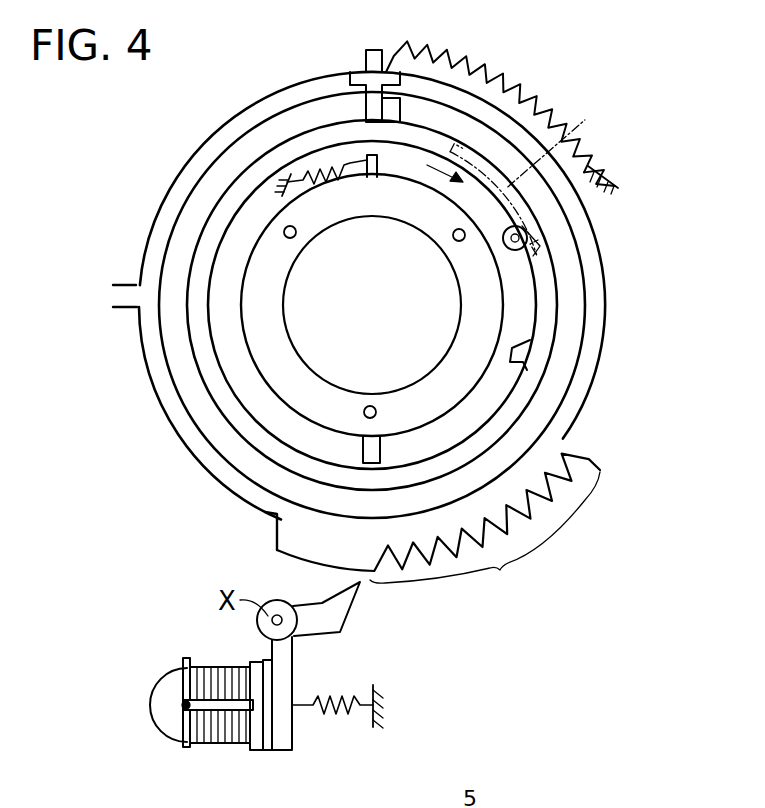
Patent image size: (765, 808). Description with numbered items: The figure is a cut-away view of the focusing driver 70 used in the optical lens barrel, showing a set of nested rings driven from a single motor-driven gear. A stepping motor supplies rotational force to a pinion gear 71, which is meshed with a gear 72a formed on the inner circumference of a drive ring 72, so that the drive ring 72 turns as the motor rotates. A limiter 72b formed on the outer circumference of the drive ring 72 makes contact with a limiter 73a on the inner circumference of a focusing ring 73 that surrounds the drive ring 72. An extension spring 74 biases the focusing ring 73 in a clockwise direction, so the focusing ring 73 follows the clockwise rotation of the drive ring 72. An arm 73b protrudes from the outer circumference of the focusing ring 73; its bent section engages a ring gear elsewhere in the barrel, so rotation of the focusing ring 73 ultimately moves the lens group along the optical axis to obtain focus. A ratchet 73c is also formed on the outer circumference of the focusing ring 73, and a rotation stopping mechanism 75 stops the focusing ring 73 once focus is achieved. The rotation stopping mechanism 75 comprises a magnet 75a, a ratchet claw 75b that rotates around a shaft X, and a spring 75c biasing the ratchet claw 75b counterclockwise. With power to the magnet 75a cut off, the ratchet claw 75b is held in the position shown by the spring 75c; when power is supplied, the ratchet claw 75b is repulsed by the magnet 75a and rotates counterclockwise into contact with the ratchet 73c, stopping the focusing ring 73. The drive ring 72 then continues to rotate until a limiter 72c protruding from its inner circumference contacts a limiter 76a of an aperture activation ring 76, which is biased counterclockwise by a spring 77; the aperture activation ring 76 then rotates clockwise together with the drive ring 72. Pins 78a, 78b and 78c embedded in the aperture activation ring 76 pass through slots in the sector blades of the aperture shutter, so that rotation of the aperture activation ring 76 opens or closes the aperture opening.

The focusing driver 70 is at (168, 170).
The pinion gear 71 is at (532, 243).
The drive ring 72 is at (500, 415).
The gear 72a is at (586, 122).
The limiter 72b is at (418, 47).
The limiter 72c is at (518, 344).
The focusing ring 73 is at (600, 286).
The limiter 73a is at (372, 110).
The arm 73b is at (121, 310).
The ratchet 73c is at (438, 536).
The extension spring 74 is at (583, 140).
The rotation stopping mechanism 75 is at (150, 700).
The magnet 75a is at (222, 746).
The ratchet claw 75b is at (330, 622).
The spring 75c is at (332, 713).
The aperture activation ring 76 is at (482, 376).
The limiter 76a is at (367, 452).
The spring 77 is at (302, 172).
The pin 78a is at (294, 237).
The pin 78b is at (370, 405).
The pin 78c is at (455, 241).